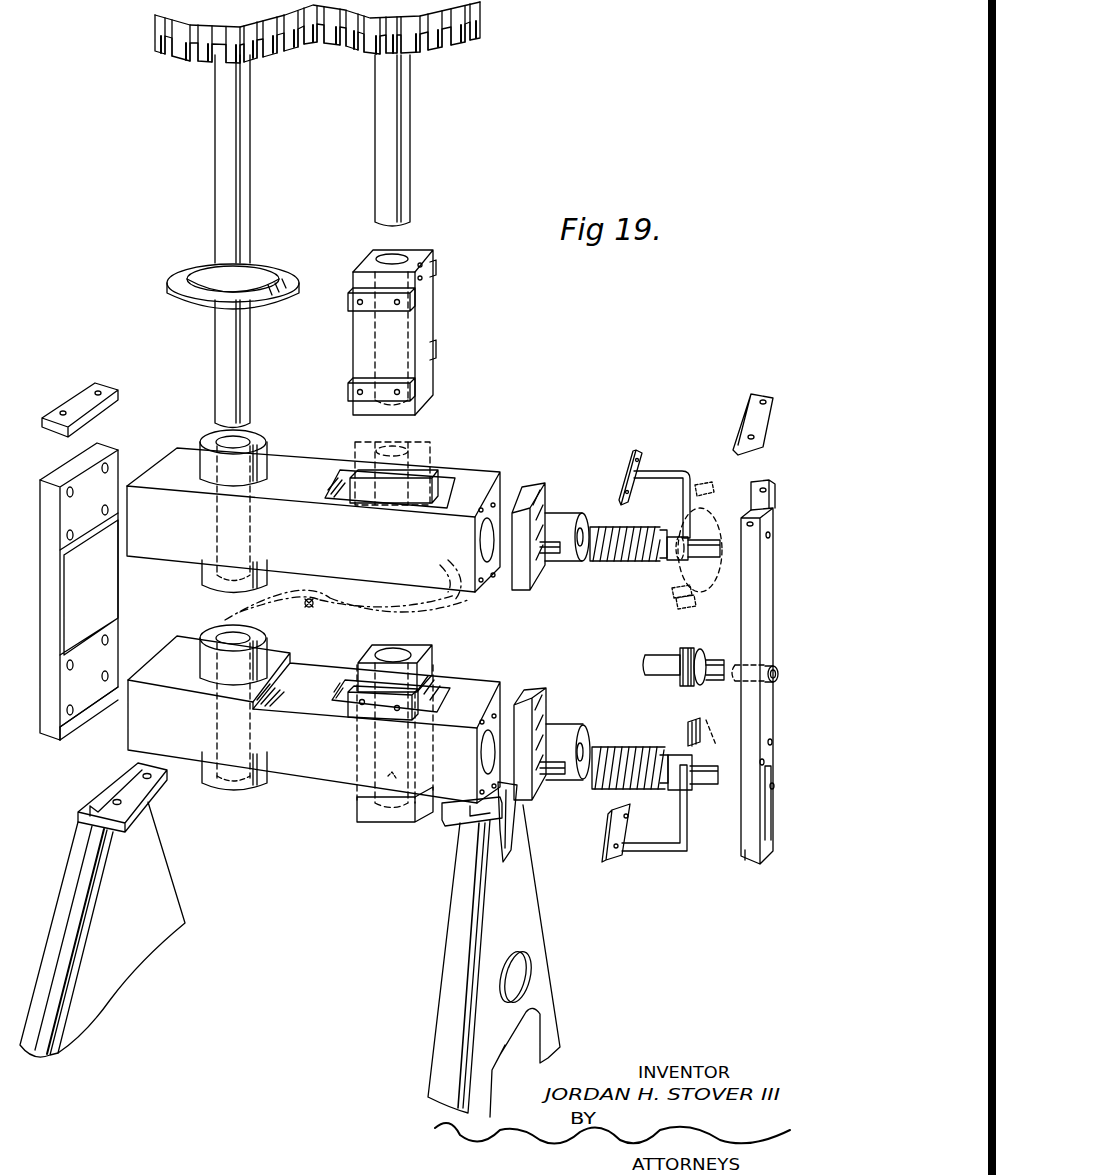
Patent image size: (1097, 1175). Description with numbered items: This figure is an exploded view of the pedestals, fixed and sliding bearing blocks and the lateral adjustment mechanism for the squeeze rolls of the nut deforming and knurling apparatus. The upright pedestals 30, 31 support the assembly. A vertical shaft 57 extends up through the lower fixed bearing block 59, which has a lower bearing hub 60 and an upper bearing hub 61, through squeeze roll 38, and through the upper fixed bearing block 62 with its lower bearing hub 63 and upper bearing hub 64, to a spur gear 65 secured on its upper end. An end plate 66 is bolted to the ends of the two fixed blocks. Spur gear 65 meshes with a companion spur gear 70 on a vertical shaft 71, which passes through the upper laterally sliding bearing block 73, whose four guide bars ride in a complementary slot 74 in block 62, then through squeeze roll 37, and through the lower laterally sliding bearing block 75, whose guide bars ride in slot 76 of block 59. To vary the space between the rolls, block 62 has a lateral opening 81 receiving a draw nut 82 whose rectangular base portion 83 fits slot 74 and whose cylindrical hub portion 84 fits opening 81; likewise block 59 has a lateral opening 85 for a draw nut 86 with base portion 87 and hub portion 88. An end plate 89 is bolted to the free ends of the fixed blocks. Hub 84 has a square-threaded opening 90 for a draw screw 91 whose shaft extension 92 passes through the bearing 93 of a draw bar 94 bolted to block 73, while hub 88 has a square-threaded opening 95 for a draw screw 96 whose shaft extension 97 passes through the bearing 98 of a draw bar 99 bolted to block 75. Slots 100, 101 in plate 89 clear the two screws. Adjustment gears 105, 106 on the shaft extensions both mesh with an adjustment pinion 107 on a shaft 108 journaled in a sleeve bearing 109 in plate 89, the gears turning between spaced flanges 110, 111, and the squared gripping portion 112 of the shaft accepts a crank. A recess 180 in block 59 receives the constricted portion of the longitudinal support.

The pedestal 30 is at (538, 928).
The pedestal 31 is at (158, 852).
The squeeze roll 37 is at (330, 612).
The squeeze roll 38 is at (166, 285).
The vertical shaft 57 is at (214, 235).
The lower fixed bearing block 59 is at (330, 778).
The lower bearing hub 60 is at (262, 786).
The upper bearing hub 61 is at (200, 660).
The upper fixed bearing block 62 is at (168, 463).
The lower bearing hub 63 is at (206, 574).
The upper bearing hub 64 is at (200, 440).
The spur gear 65 is at (183, 60).
The end plate 66 is at (40, 588).
The companion spur gear 70 is at (463, 40).
The vertical shaft 71 is at (411, 155).
The upper laterally sliding bearing block 73 is at (416, 315).
The slot 74 is at (440, 485).
The lower laterally sliding bearing block 75 is at (362, 822).
The slot 76 is at (432, 685).
The lateral opening 81 is at (488, 565).
The draw nut 82 is at (566, 489).
The base portion 83 is at (530, 500).
The cylindrical hub portion 84 is at (565, 522).
The lateral opening 85 is at (513, 730).
The draw nut 86 is at (568, 720).
The base portion 87 is at (530, 692).
The cylindrical hub portion 88 is at (570, 735).
The end plate 89 is at (748, 860).
The square-threaded opening 90 is at (577, 560).
The draw screw 91 is at (615, 562).
The shaft extension 92 is at (664, 560).
The bearing 93 is at (672, 537).
The draw bar 94 is at (666, 478).
The square-threaded opening 95 is at (592, 755).
The draw screw 96 is at (620, 790).
The shaft extension 97 is at (666, 778).
The bearing 98 is at (690, 760).
The draw bar 99 is at (650, 852).
The slot 100 is at (748, 512).
The slot 101 is at (768, 838).
The squeeze roll adjustment gear 105 is at (714, 480).
The squeeze roll adjustment gear 106 is at (688, 740).
The squeeze roll adjustment pinion 107 is at (698, 685).
The shaft 108 is at (655, 665).
The sleeve bearing 109 is at (768, 676).
The flange 110 is at (686, 648).
The flange 111 is at (698, 650).
The gripping portion 112 is at (716, 660).
The recess 180 is at (300, 715).